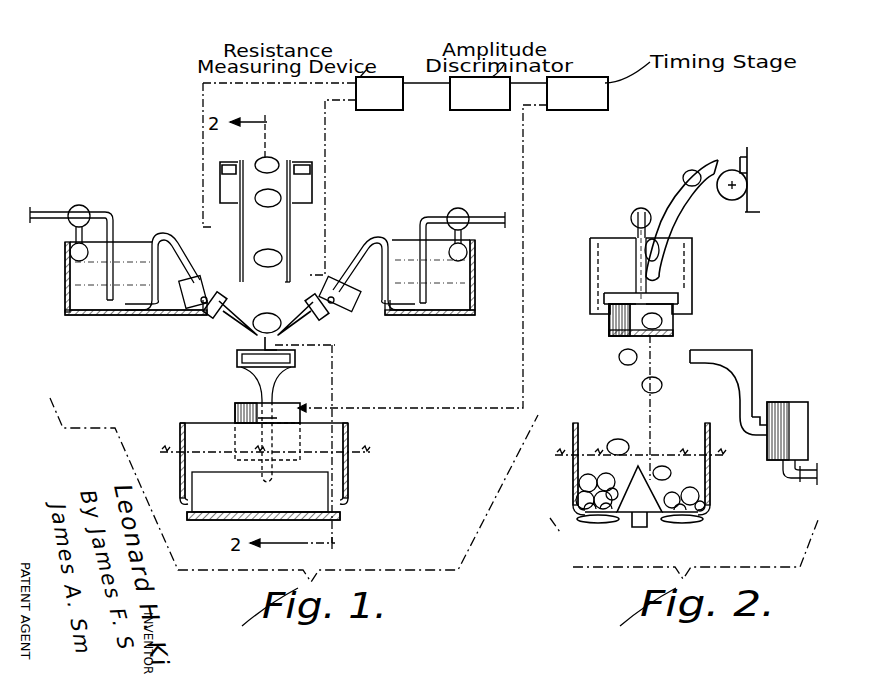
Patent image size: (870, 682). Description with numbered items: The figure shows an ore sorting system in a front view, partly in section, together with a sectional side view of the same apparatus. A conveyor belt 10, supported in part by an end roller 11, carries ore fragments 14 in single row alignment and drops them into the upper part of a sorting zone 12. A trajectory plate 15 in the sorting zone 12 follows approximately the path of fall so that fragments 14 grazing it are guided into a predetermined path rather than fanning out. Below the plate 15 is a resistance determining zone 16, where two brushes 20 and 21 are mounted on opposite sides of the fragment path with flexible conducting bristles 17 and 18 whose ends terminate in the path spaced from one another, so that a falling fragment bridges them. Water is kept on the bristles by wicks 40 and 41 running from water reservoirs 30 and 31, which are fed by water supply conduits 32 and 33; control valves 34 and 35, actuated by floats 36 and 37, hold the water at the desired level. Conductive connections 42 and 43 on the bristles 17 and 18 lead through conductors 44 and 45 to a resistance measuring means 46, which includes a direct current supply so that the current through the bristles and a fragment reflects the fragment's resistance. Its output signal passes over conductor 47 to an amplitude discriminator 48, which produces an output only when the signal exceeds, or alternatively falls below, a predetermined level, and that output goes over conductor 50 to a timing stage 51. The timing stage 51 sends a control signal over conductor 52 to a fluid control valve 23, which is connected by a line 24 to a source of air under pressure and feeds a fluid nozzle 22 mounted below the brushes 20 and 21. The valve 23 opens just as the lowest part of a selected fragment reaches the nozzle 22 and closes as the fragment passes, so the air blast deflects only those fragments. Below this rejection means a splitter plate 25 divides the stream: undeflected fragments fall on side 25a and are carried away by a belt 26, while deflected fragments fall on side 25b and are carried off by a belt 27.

In FIG. 2, the belt 10 is at (745, 212).
In FIG. 1, the end roller 11 is at (230, 203).
In FIG. 2, the end roller 11 is at (747, 186).
In FIG. 1, the sorting zone 12 is at (313, 231).
In FIG. 2, the sorting zone 12 is at (726, 270).
In FIG. 1, the fragments 14 is at (255, 240).
In FIG. 2, the fragments 14 is at (684, 172).
In FIG. 1, the trajectory plate 15 is at (292, 274).
In FIG. 2, the trajectory plate 15 is at (672, 218).
In FIG. 1, the resistance determining zone 16 is at (272, 316).
In FIG. 2, the resistance determining zone 16 is at (696, 341).
In FIG. 1, the bristles 17 is at (240, 328).
In FIG. 2, the bristles 17 is at (609, 322).
In FIG. 1, the bristles 18 is at (312, 325).
In FIG. 1, the brush 20 is at (214, 318).
In FIG. 1, the brush 21 is at (322, 294).
In FIG. 1, the fluid nozzle 22 is at (237, 362).
In FIG. 2, the fluid nozzle 22 is at (716, 352).
In FIG. 1, the fluid control valve 23 is at (235, 408).
In FIG. 2, the fluid control valve 23 is at (793, 404).
In FIG. 2, the line 24 is at (787, 480).
In FIG. 1, the splitter plate 25 is at (320, 486).
In FIG. 2, the splitter plate 25 is at (639, 496).
In FIG. 2, the side of splitter plate 25a is at (660, 490).
In FIG. 2, the side of splitter plate 25b is at (578, 478).
In FIG. 1, the belt 26 is at (343, 518).
In FIG. 2, the belt 26 is at (688, 523).
In FIG. 2, the belt 27 is at (602, 523).
In FIG. 1, the water reservoir 30 is at (62, 318).
In FIG. 1, the water reservoir 31 is at (468, 318).
In FIG. 1, the water supply conduit 32 is at (52, 212).
In FIG. 1, the water supply conduit 33 is at (484, 217).
In FIG. 1, the control valve 34 is at (89, 210).
In FIG. 2, the control valve 34 is at (650, 212).
In FIG. 1, the control valve 35 is at (450, 212).
In FIG. 1, the float 36 is at (68, 235).
In FIG. 1, the float 37 is at (468, 252).
In FIG. 1, the wick 40 is at (170, 240).
In FIG. 1, the wick 41 is at (374, 240).
In FIG. 1, the conductive connection 42 is at (200, 304).
In FIG. 1, the conductive connection 43 is at (333, 296).
In FIG. 1, the conductor 44 is at (203, 141).
In FIG. 1, the conductor 45 is at (325, 152).
In FIG. 1, the resistance measuring means 46 is at (390, 110).
In FIG. 1, the conductor 47 is at (432, 88).
In FIG. 1, the amplitude discriminator 48 is at (492, 110).
In FIG. 1, the conductor 50 is at (522, 88).
In FIG. 1, the timing stage 51 is at (580, 110).
In FIG. 1, the conductor 52 is at (523, 184).